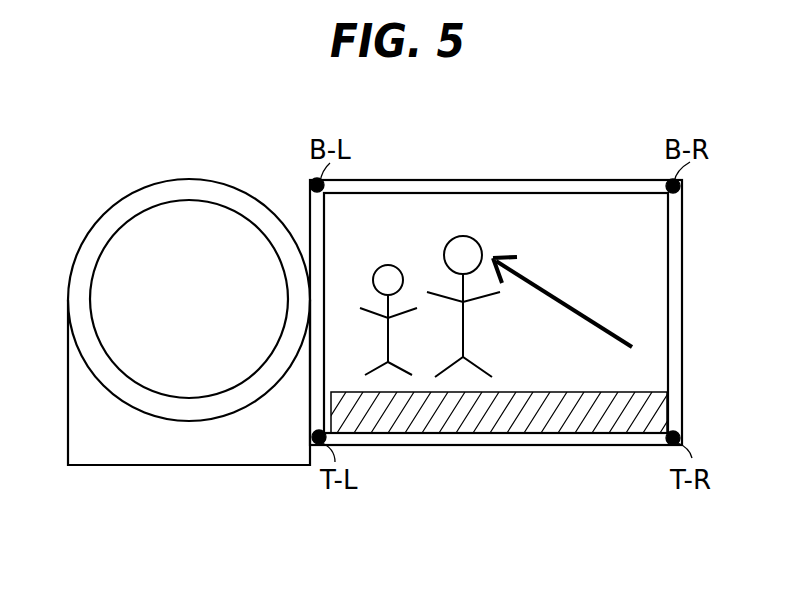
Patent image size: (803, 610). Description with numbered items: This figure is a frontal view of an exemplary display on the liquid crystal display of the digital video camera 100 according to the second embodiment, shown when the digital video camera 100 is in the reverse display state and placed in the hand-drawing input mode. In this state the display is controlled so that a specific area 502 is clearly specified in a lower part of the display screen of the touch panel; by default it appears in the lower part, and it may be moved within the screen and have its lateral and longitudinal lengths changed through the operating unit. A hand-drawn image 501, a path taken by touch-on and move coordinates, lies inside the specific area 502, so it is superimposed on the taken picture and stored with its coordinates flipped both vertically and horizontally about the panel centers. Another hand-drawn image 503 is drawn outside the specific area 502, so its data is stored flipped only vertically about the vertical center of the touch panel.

The digital video camera 100 is at (88, 208).
The hand-drawn image 501 is at (415, 422).
The specific area 502 is at (573, 417).
The hand-drawn image 503 is at (593, 280).